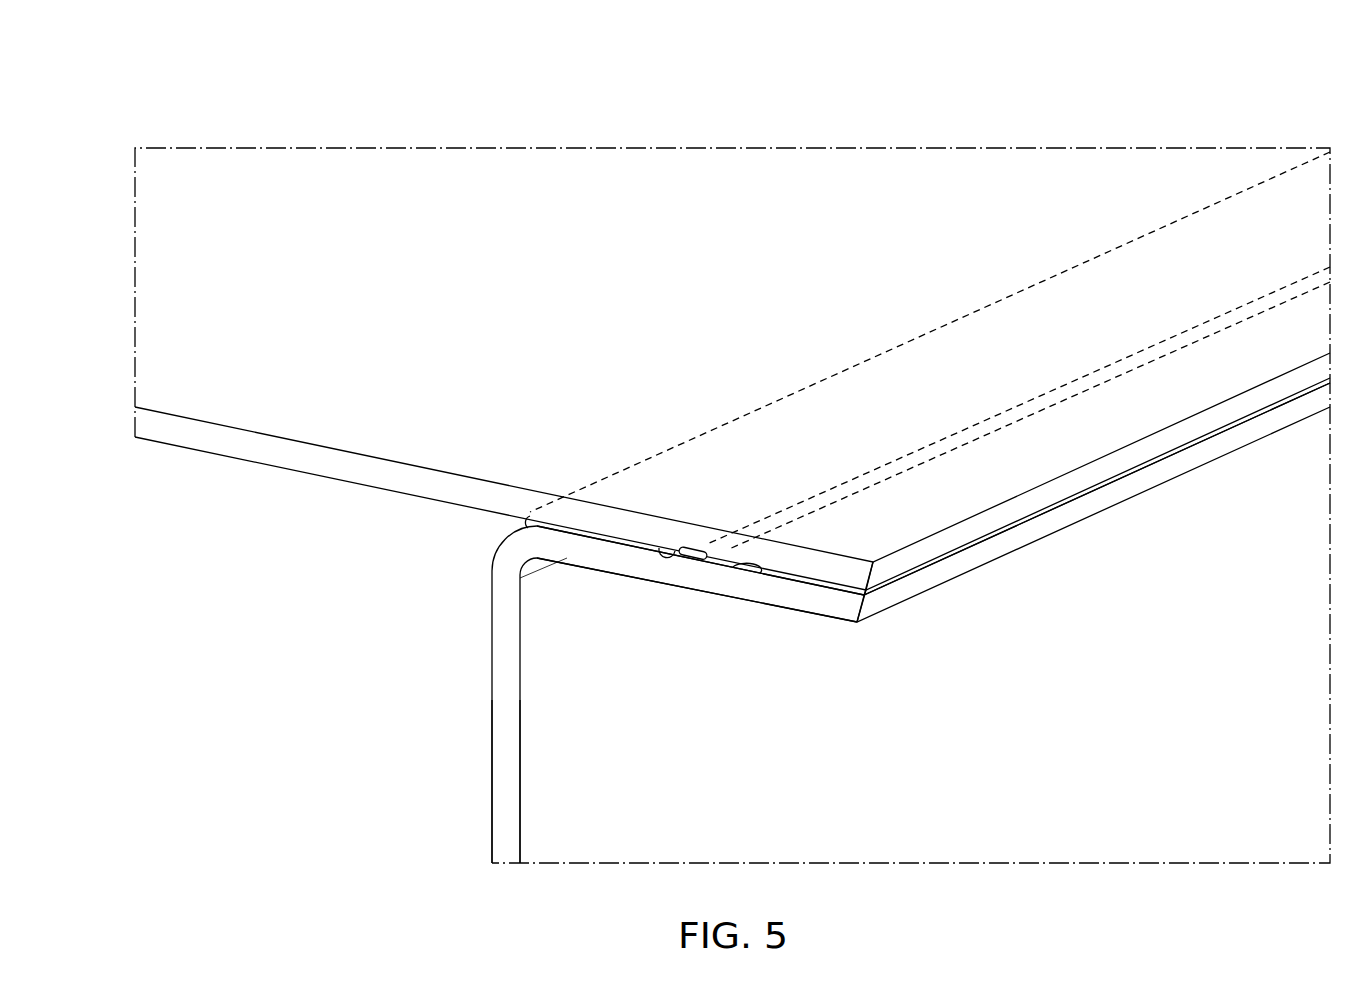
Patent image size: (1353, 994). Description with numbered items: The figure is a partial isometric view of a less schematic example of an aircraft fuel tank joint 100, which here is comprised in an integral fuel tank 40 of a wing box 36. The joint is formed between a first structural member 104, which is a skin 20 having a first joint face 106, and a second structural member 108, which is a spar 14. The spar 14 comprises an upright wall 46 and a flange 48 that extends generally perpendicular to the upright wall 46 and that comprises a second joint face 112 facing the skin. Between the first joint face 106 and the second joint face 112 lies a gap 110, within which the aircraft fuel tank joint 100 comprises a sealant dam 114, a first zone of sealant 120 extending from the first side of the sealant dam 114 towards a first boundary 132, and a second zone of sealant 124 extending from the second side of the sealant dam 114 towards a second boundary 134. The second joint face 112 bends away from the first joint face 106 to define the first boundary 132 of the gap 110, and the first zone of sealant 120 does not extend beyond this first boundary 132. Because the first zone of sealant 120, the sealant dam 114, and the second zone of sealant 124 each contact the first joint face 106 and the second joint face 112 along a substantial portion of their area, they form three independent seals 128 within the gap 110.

The spar 14 is at (467, 694).
The skin 20 is at (349, 483).
The wing box 36 is at (735, 445).
The integral fuel tank 40 is at (1260, 103).
The upright wall 46 is at (506, 628).
The flange 48 is at (925, 546).
The aircraft fuel tank joint 100 is at (735, 445).
The first structural member 104 is at (732, 471).
The first joint face 106 is at (662, 543).
The second structural member 108 is at (474, 745).
The gap 110 is at (822, 588).
The second joint face 112 is at (698, 568).
The sealant dam 114 is at (699, 543).
The first zone of sealant 120 is at (863, 623).
The second zone of sealant 124 is at (804, 584).
The independent seals 128 is at (627, 548).
The first boundary 132 is at (510, 522).
The second boundary 134 is at (870, 594).